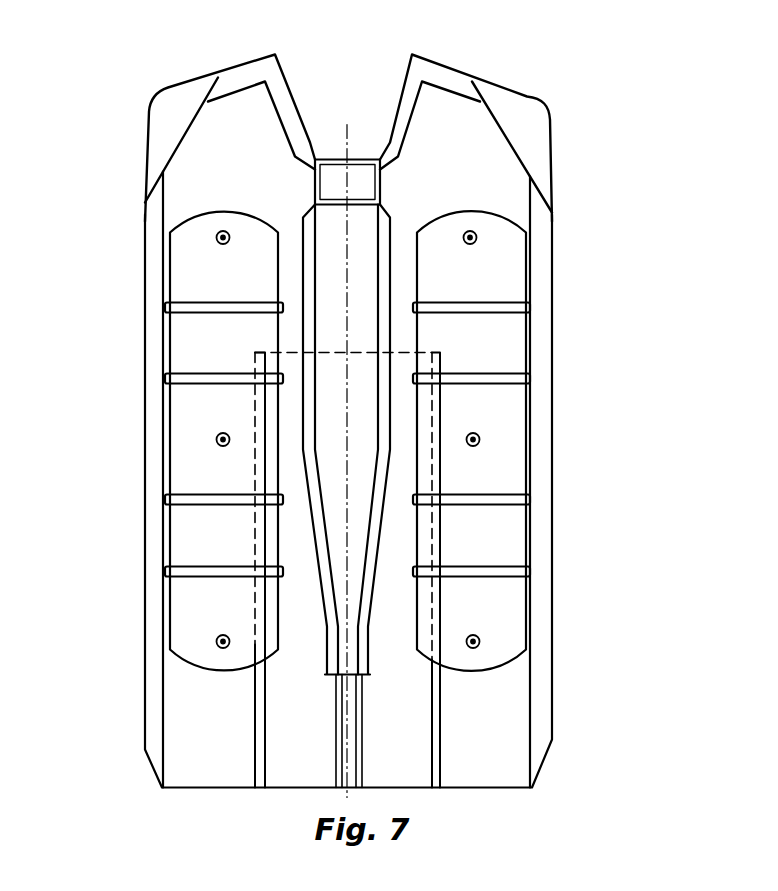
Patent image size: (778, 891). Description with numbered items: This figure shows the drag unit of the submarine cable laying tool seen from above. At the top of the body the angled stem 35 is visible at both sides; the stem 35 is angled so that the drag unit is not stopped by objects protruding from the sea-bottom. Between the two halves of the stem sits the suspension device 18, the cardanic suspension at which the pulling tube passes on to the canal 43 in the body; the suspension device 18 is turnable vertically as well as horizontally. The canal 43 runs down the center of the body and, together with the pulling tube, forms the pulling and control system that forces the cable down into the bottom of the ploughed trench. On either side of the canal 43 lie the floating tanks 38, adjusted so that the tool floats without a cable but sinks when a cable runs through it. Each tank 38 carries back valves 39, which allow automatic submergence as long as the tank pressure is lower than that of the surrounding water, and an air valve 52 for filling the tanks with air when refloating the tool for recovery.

The suspension device 18 is at (332, 177).
The stem 35 is at (192, 83).
The floating tanks 38 is at (182, 260).
The back valves 39 is at (476, 244).
The canal 43 is at (340, 300).
The air valve 52 is at (481, 440).